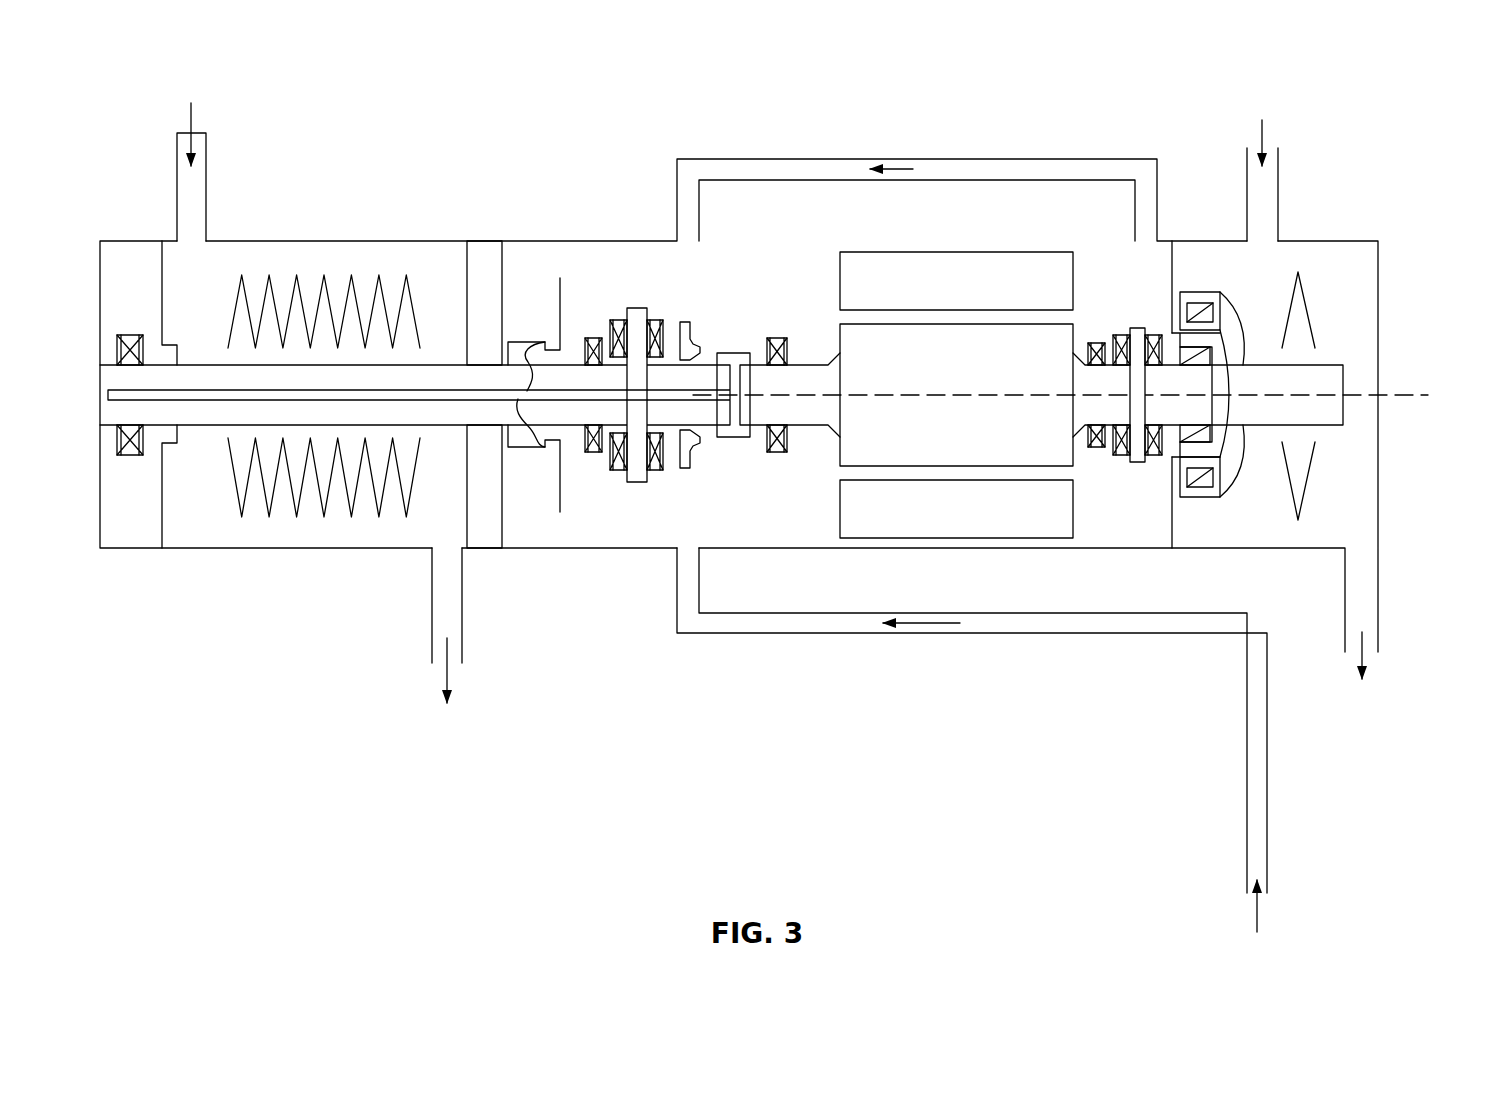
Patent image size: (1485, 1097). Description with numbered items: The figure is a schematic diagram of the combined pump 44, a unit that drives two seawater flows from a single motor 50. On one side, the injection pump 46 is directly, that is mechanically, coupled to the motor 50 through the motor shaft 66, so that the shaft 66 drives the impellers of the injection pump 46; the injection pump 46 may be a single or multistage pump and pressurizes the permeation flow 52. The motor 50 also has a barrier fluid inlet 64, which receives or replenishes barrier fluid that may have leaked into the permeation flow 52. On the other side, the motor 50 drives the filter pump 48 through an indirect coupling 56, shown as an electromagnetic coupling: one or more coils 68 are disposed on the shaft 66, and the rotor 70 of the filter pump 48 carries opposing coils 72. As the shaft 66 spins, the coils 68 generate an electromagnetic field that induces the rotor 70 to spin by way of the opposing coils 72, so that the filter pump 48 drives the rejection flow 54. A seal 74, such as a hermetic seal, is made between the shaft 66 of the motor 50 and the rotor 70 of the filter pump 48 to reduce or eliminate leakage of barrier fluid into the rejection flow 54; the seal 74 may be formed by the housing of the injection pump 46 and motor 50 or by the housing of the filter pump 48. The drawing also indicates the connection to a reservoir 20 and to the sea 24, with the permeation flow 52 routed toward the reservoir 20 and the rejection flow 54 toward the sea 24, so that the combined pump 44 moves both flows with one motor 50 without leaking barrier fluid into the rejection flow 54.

The reservoir 20 is at (486, 738).
The sea 24 is at (1394, 740).
The combined pump 44 is at (1404, 90).
The injection pump 46 is at (350, 226).
The filter pump 48 is at (1362, 276).
The motor 50 is at (949, 234).
The permeation flow 52 is at (190, 114).
The rejection flow 54 is at (1265, 133).
The indirect coupling 56 is at (1192, 288).
The barrier fluid inlet 64 is at (1268, 906).
The motor shaft 66 is at (1097, 443).
The coils 68 is at (1193, 423).
The rotor 70 is at (1226, 305).
The opposing coils 72 is at (1203, 489).
The seal 74 is at (1168, 519).